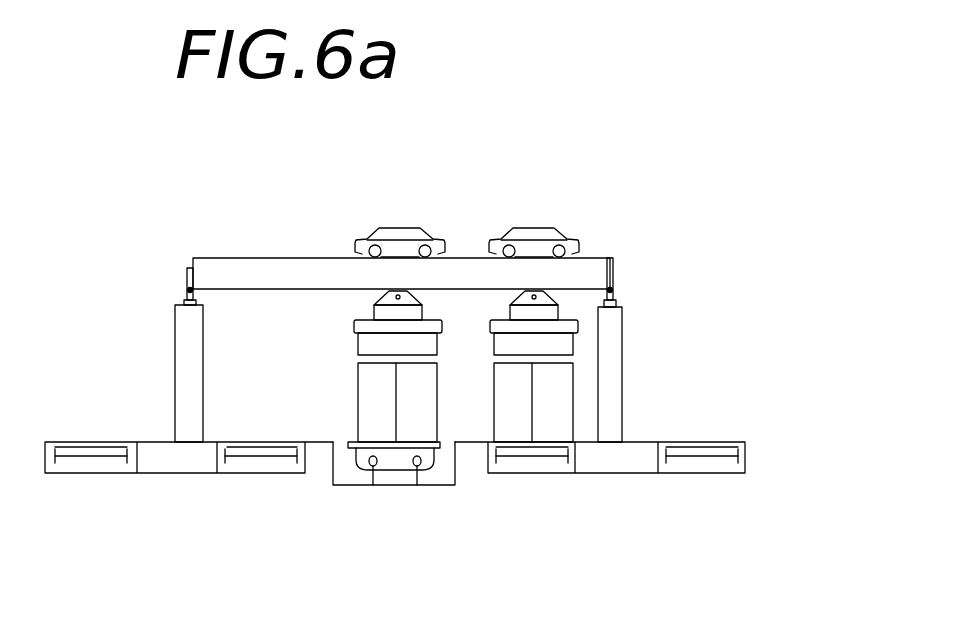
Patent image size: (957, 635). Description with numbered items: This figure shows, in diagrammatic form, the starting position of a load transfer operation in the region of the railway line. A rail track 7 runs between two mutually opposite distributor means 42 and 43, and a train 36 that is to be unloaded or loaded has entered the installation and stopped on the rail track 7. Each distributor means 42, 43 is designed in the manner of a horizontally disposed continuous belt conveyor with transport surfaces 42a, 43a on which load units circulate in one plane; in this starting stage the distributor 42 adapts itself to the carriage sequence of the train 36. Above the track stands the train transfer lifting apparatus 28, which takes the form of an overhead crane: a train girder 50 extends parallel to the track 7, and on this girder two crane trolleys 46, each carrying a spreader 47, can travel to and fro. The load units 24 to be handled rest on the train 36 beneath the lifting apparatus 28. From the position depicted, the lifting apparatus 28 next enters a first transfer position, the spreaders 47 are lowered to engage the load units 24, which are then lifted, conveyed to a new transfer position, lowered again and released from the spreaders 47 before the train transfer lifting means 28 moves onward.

The train transfer lifting apparatus 28 is at (482, 206).
The train girder 50 is at (255, 276).
The crane trolley 46 is at (536, 237).
The spreader 47 is at (548, 312).
The load unit 24 is at (377, 398).
The distributor means 43 is at (183, 503).
The transport surface 43a is at (95, 458).
The distributor means 42 is at (633, 497).
The transport surface 42a is at (703, 460).
The rail track 7 is at (396, 487).
The train 36 is at (366, 452).